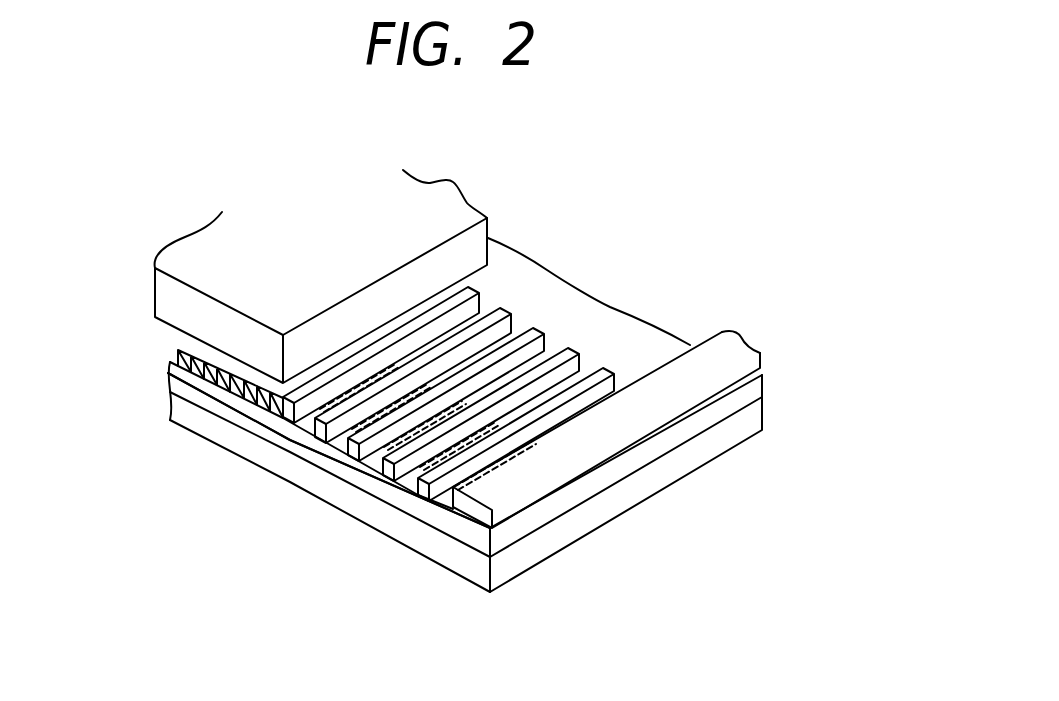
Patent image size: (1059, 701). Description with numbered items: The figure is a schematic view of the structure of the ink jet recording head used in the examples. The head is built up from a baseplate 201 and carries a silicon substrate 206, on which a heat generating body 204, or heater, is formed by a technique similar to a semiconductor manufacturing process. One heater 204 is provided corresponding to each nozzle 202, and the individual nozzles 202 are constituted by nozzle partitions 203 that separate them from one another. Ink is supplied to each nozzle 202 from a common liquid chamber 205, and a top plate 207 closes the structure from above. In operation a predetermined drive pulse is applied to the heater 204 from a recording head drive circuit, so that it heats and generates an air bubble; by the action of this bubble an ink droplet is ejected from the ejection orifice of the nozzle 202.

The baseplate 201 is at (587, 515).
The nozzle 202 is at (203, 373).
The nozzle partition 203 is at (568, 352).
The heat generating body 204 is at (368, 467).
The common liquid chamber 205 is at (523, 287).
The silicon substrate 206 is at (262, 380).
The top plate 207 is at (433, 203).